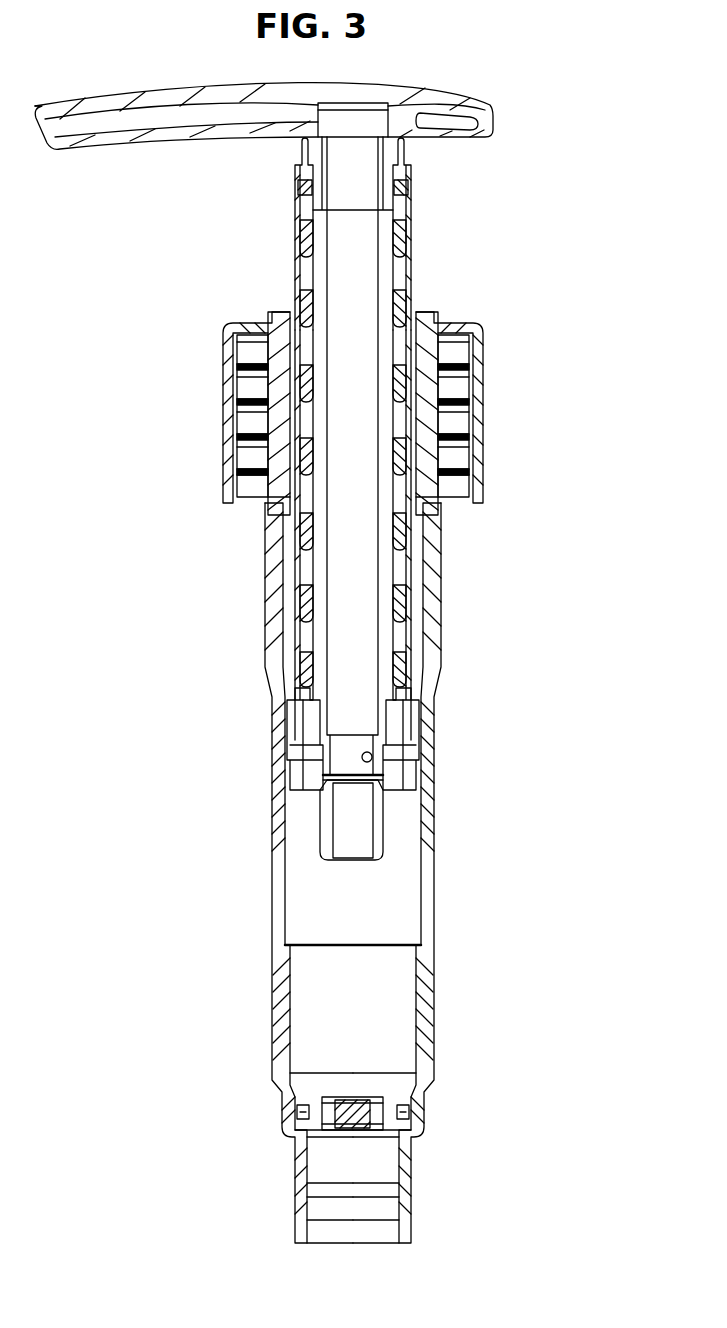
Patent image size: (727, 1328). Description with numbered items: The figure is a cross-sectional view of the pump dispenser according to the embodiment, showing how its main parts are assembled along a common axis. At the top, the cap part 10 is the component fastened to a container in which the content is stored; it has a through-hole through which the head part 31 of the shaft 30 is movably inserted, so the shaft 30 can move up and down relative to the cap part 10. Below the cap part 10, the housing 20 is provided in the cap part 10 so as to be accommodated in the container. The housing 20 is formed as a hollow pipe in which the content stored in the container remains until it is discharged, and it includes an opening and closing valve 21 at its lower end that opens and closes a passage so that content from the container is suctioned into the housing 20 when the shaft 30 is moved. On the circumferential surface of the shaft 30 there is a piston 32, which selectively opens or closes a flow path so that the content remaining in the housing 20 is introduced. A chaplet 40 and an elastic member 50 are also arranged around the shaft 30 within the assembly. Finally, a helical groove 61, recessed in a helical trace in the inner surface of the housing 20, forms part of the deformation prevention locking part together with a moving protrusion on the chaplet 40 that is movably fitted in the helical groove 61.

The cap part 10 is at (235, 358).
The housing 20 is at (435, 840).
The opening and closing valve 21 is at (362, 1095).
The shaft 30 is at (387, 550).
The head part 31 is at (415, 222).
The piston 32 is at (392, 748).
The chaplet 40 is at (440, 462).
The elastic member 50 is at (303, 646).
The helical groove 61 is at (248, 486).